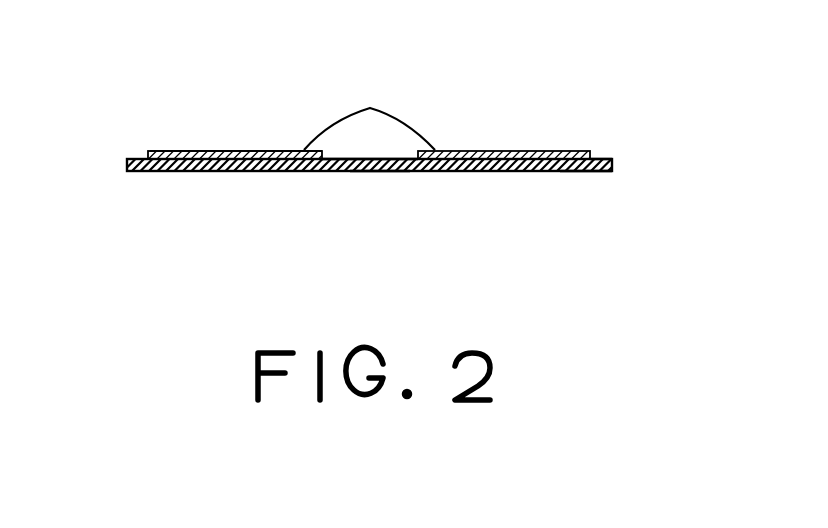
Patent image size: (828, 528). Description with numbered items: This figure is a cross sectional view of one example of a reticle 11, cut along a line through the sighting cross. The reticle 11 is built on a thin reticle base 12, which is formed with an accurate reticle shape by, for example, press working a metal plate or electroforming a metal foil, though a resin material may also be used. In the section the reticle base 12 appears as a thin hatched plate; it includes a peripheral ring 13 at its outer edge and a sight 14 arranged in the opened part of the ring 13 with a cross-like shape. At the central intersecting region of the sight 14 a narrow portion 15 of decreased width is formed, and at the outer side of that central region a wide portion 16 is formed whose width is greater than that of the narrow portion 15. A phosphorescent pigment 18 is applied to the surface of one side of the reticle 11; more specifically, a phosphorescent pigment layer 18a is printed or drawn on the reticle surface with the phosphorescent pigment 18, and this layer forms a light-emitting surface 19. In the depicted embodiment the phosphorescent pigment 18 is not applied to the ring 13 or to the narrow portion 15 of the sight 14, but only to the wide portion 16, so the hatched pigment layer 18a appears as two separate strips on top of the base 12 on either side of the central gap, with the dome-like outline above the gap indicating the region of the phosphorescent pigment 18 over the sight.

The reticle 11 is at (622, 141).
The reticle base 12 is at (612, 166).
The peripheral ring 13 is at (585, 172).
The sight 14 is at (378, 172).
The narrow portion 15 is at (335, 172).
The wide portion 16 is at (220, 172).
The phosphorescent pigment 18 is at (369, 108).
The phosphorescent pigment layer 18a is at (254, 150).
The light-emitting surface 19 is at (195, 150).